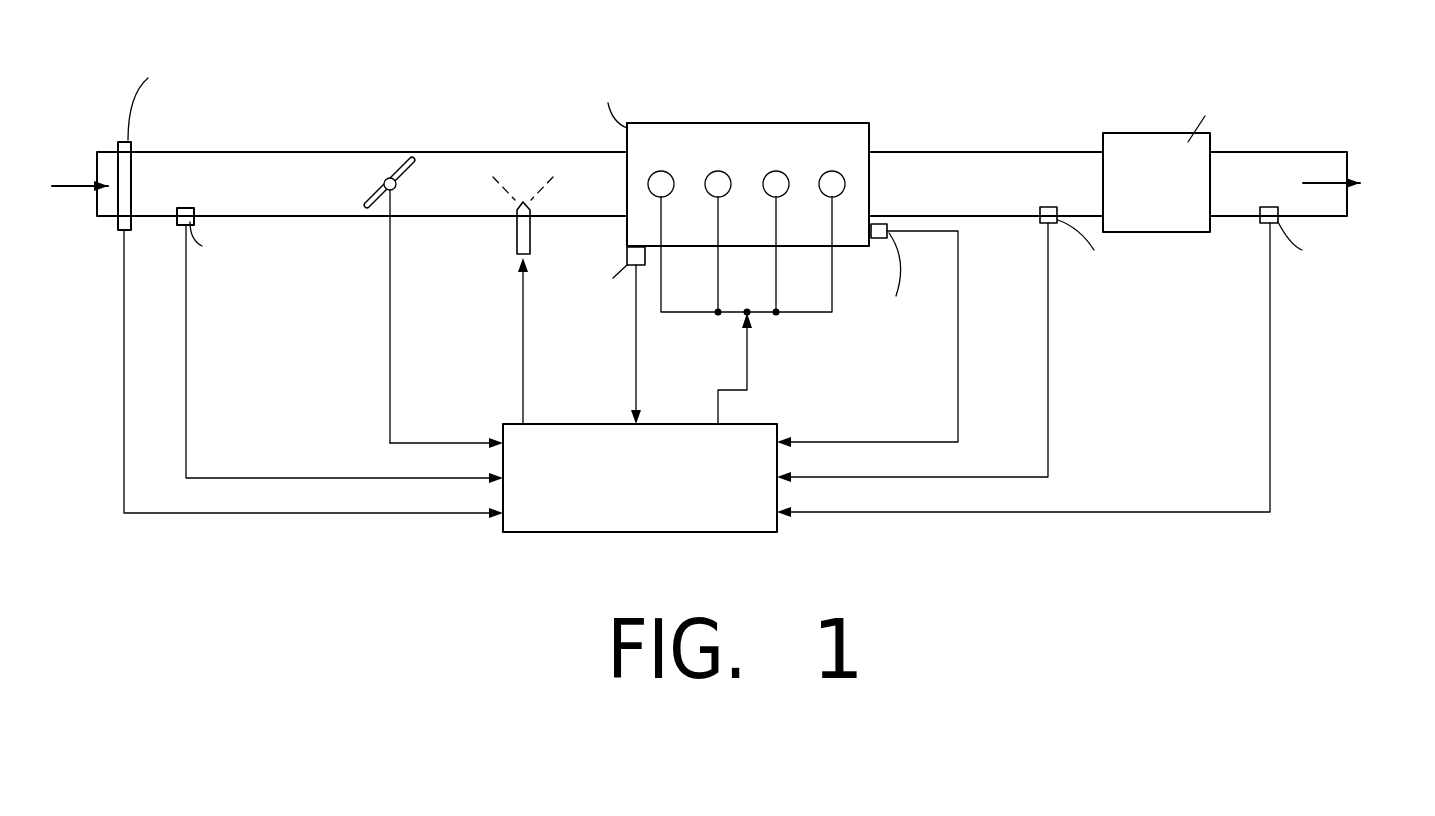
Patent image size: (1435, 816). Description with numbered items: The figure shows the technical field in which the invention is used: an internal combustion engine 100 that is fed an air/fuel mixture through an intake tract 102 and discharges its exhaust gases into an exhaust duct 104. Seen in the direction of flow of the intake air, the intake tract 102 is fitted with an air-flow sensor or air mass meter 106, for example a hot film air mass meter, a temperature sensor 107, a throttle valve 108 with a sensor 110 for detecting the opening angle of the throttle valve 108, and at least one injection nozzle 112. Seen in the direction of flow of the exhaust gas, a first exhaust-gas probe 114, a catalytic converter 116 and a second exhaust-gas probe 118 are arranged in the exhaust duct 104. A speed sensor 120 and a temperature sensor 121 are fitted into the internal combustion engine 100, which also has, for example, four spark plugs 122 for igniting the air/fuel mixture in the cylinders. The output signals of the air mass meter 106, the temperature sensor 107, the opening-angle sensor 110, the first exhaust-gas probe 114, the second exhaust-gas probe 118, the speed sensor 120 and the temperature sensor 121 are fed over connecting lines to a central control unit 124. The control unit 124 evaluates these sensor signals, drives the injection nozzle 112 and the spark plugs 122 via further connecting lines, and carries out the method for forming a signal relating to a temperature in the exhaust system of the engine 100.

The internal combustion engine 100 is at (788, 130).
The intake tract 102 is at (283, 152).
The exhaust duct 104 is at (930, 152).
The air mass meter 106 is at (125, 158).
The temperature sensor 107 is at (188, 208).
The throttle valve 108 is at (403, 172).
The sensor for detecting the opening angle of the throttle valve 110 is at (384, 184).
The injection nozzle 112 is at (520, 232).
The first exhaust-gas probe 114 is at (1041, 218).
The catalytic converter 116 is at (1112, 143).
The second exhaust-gas probe 118 is at (1265, 212).
The speed sensor 120 is at (880, 238).
The temperature sensor 121 is at (630, 256).
The spark plugs 122 is at (660, 180).
The central control unit 124 is at (575, 520).